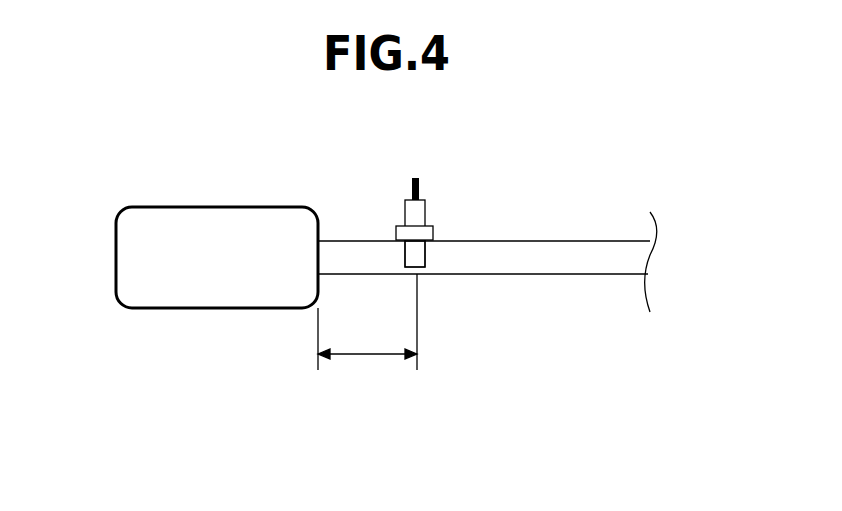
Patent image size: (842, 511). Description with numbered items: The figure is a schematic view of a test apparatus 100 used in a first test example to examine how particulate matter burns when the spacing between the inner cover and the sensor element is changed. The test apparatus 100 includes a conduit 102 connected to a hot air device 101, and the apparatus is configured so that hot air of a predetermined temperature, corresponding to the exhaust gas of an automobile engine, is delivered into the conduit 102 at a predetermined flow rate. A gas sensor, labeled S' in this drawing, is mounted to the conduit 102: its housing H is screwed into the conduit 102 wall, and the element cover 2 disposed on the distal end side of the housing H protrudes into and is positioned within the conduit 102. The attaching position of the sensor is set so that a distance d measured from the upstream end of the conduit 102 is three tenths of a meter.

The test apparatus 100 is at (533, 183).
The hot air device 101 is at (198, 230).
The conduit 102 is at (552, 256).
The sensor S' is at (461, 193).
The element cover 2 is at (415, 255).
The housing H is at (410, 233).
The distance d is at (367, 322).